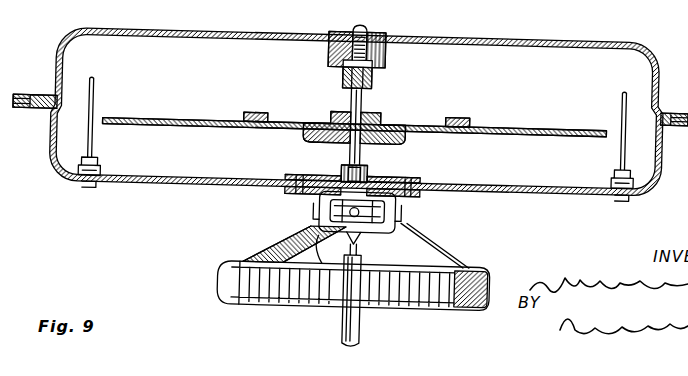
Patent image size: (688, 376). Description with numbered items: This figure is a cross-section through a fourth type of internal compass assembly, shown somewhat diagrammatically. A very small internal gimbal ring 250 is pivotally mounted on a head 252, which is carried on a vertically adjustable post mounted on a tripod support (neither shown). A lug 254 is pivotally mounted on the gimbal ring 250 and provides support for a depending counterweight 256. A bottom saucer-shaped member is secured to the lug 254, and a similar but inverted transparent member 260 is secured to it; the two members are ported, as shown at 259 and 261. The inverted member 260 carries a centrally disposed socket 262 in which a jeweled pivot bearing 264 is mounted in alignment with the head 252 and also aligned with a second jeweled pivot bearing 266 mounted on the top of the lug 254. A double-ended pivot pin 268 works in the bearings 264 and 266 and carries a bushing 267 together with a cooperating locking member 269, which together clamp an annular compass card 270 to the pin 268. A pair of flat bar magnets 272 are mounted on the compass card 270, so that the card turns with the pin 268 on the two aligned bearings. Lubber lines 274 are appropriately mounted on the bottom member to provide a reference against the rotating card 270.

The internal gimbal ring 250 is at (374, 200).
The head 252 is at (362, 230).
The lug 254 is at (322, 204).
The counterweight 256 is at (557, 188).
The port 259 is at (440, 190).
The inverted transparent member 260 is at (546, 35).
The port 261 is at (392, 36).
The socket 262 is at (386, 52).
The jeweled pivot bearing 264 is at (373, 80).
The second jeweled pivot bearing 266 is at (343, 169).
The bushing 267 is at (317, 114).
The double-ended pivot pin 268 is at (351, 152).
The locking member 269 is at (398, 142).
The annular compass card 270 is at (157, 112).
The flat bar magnets 272 is at (256, 112).
The lubber lines 274 is at (96, 78).